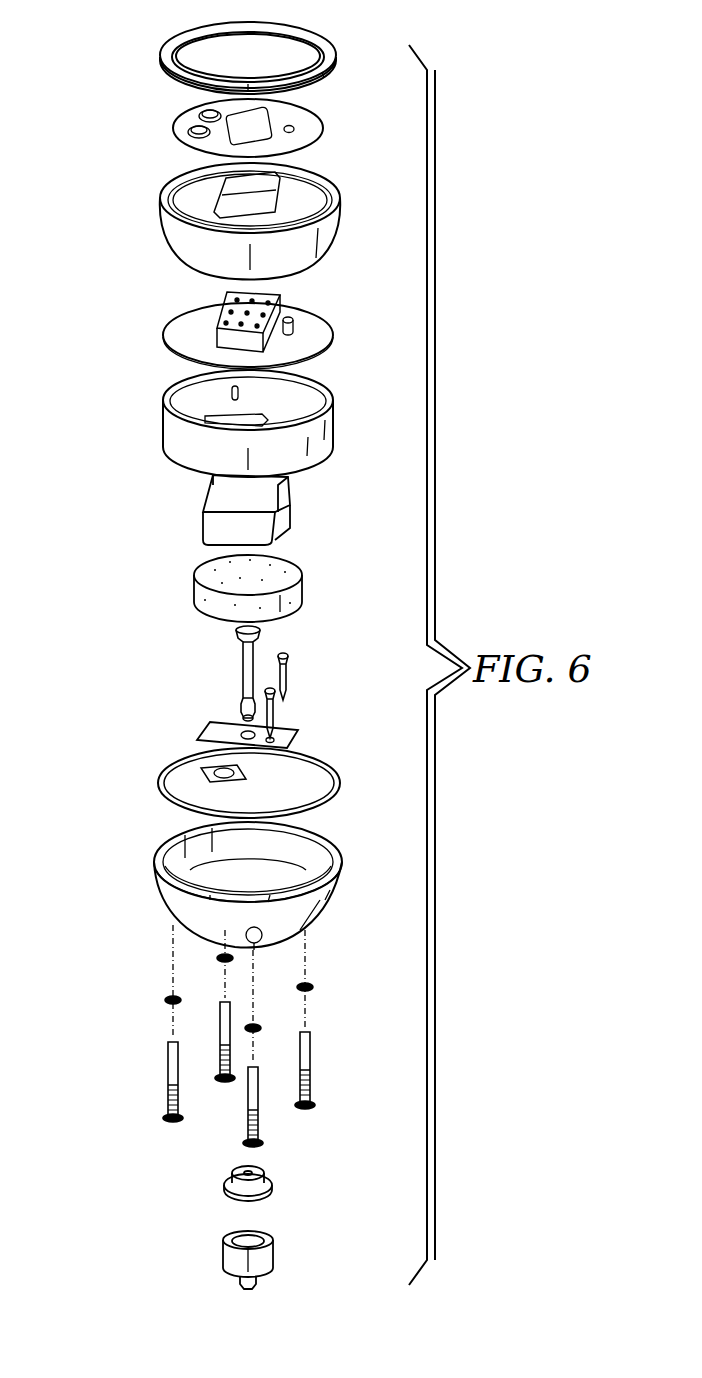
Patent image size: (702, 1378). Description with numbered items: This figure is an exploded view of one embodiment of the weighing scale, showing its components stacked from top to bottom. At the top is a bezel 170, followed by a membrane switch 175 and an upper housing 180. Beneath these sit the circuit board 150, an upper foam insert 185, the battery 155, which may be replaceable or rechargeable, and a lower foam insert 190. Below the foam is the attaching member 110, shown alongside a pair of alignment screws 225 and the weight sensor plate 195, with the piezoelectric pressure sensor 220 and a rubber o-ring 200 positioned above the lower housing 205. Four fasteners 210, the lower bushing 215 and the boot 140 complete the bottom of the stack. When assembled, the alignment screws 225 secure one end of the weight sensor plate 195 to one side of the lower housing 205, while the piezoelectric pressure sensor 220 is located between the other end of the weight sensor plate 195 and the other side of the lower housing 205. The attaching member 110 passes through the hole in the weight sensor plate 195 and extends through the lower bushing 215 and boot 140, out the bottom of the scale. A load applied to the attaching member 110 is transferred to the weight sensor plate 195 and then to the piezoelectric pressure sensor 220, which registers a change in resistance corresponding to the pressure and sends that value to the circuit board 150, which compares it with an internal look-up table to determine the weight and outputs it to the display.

The bezel 170 is at (160, 62).
The membrane switch 175 is at (173, 126).
The upper housing 180 is at (160, 218).
The circuit board 150 is at (163, 328).
The upper foam insert 185 is at (165, 430).
The battery 155 is at (210, 490).
The lower foam insert 190 is at (194, 590).
The attaching member 110 is at (243, 660).
The alignment screws 225 is at (288, 672).
The weight sensor plate 195 is at (205, 725).
The piezoelectric pressure sensor 220 is at (205, 770).
The rubber o-ring 200 is at (160, 783).
The lower housing 205 is at (158, 885).
The fasteners 210 is at (168, 1070).
The lower bushing 215 is at (228, 1178).
The boot 140 is at (223, 1255).